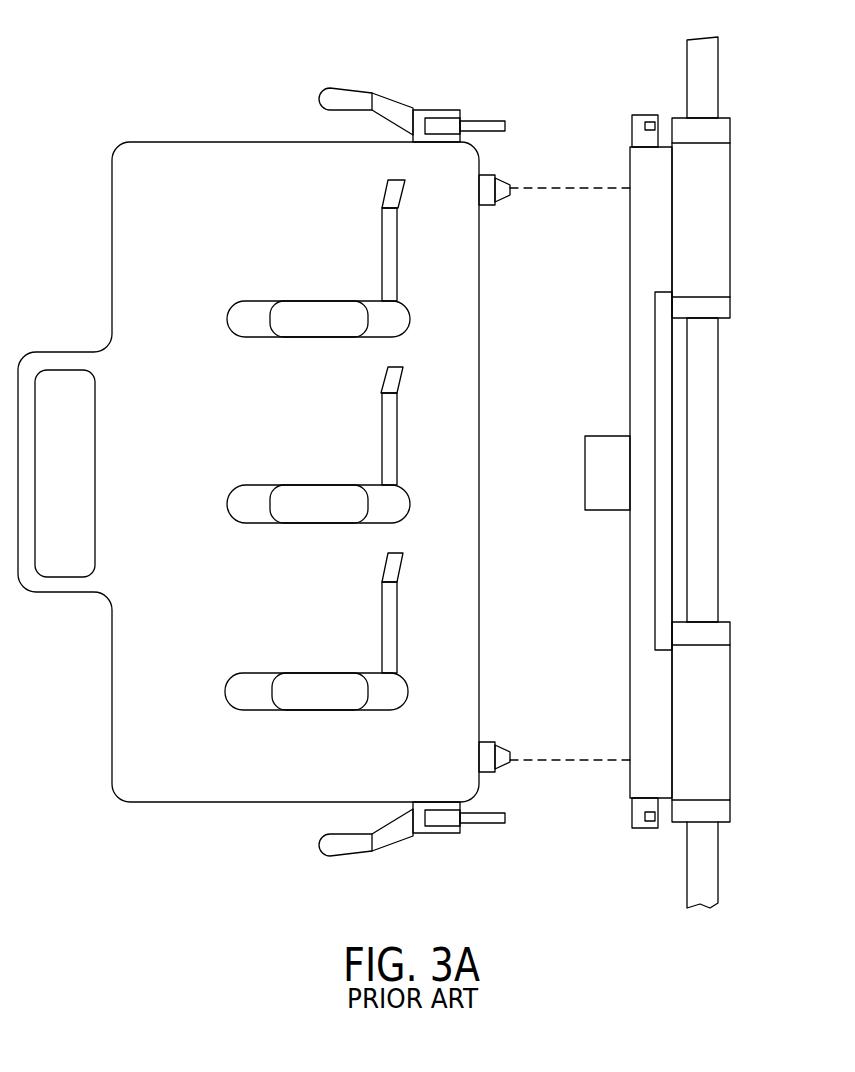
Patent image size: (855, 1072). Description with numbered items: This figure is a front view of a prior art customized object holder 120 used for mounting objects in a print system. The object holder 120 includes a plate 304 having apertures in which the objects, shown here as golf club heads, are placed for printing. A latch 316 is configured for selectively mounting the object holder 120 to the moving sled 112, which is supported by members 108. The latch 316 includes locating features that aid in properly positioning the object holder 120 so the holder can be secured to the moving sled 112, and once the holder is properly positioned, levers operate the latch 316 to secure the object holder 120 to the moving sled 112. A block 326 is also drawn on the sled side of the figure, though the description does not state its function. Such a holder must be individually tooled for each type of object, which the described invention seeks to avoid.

The object holder 120 is at (180, 96).
The plate 304 is at (112, 208).
The latch 316 is at (497, 99).
The mounting block 326 is at (610, 436).
The members 108 is at (687, 78).
The moving sled 112 is at (744, 207).